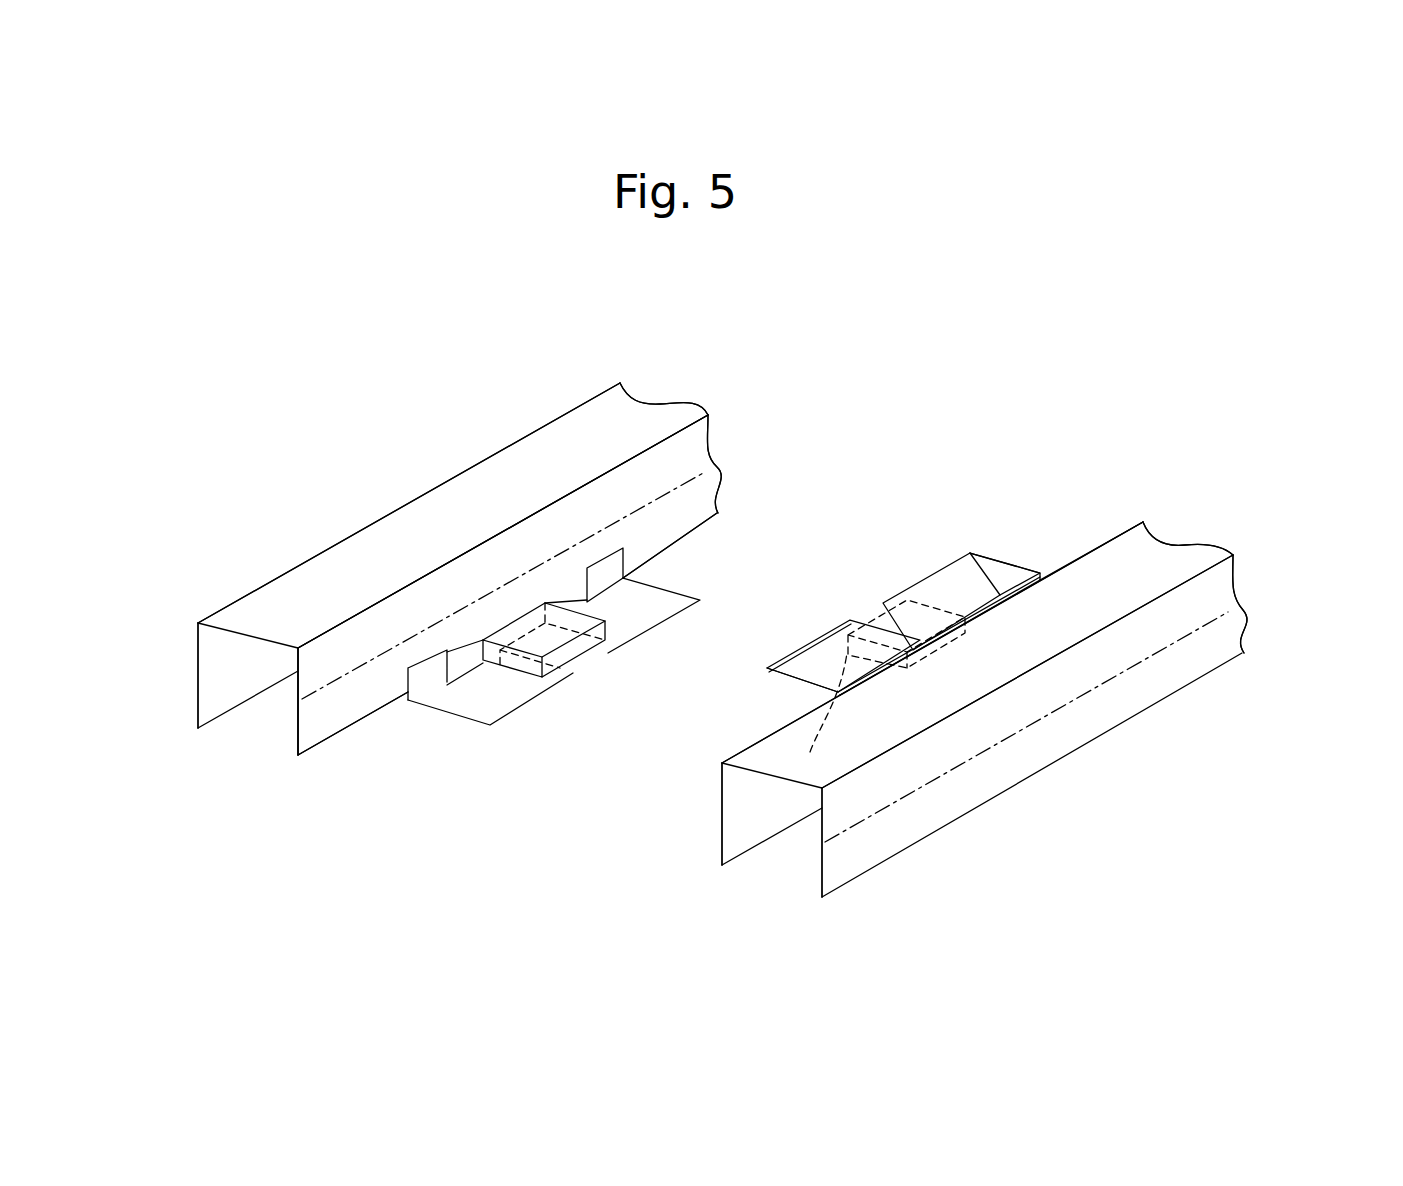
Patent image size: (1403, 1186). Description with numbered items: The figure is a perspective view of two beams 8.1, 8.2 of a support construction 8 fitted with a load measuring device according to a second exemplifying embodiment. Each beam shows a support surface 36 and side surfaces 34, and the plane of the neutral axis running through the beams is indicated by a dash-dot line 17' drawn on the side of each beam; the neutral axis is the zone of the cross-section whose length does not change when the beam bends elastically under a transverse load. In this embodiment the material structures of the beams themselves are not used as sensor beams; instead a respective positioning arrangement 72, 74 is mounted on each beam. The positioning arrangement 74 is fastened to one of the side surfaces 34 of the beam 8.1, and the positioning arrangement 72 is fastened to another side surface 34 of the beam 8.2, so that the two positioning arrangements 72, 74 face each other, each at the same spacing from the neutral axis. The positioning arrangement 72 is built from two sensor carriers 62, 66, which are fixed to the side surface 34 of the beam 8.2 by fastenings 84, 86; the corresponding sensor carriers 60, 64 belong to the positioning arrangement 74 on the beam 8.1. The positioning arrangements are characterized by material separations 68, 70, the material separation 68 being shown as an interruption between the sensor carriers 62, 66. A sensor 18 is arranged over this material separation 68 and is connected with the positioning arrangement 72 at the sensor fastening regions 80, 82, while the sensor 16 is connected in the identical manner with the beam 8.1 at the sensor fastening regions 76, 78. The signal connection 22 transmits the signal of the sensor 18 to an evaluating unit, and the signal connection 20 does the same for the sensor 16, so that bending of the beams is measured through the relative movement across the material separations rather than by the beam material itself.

The support construction 8 is at (901, 451).
The beam 8.1 is at (1013, 763).
The beam 8.2 is at (340, 597).
The sensor 16 is at (962, 615).
The line indicating plane of neutral axis 17' is at (1245, 581).
The sensor 18 is at (541, 640).
The signal connection 20 is at (810, 752).
The signal connection 22 is at (353, 702).
The side surface 34 is at (208, 698).
The support surface 36 is at (625, 415).
The sensor carrier 60 is at (1007, 573).
The sensor carrier 62 is at (662, 607).
The sensor carrier 64 is at (783, 680).
The sensor carrier 66 is at (491, 713).
The material separation 68 is at (591, 672).
The material separation 70 is at (463, 640).
The positioning arrangement 72 is at (536, 717).
The positioning arrangement 74 is at (872, 590).
The sensor fastening region 76 is at (933, 607).
The sensor fastening region 78 is at (817, 668).
The sensor fastening region 80 is at (635, 583).
The sensor fastening region 82 is at (518, 647).
The fastening 84 is at (428, 672).
The fastening 86 is at (607, 573).